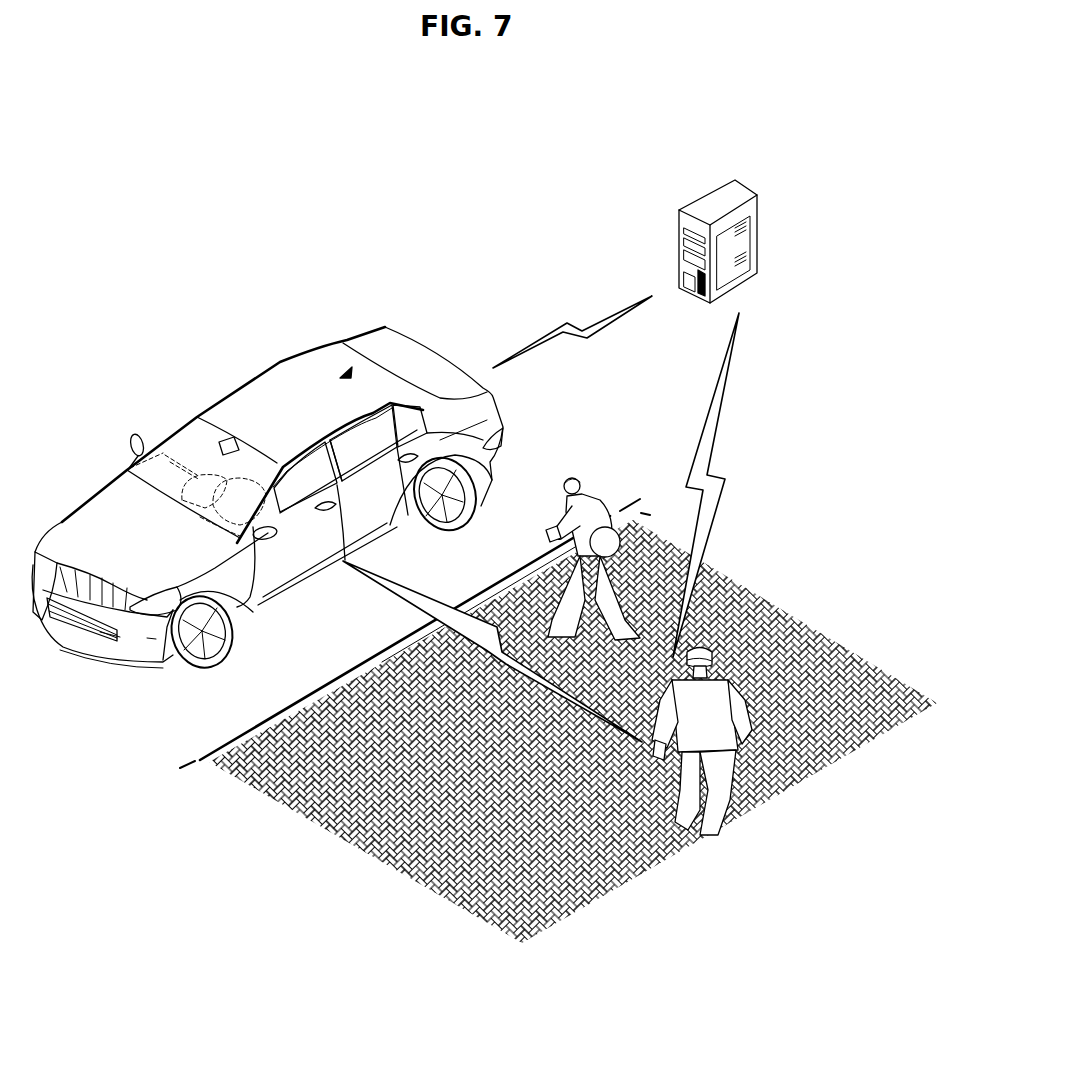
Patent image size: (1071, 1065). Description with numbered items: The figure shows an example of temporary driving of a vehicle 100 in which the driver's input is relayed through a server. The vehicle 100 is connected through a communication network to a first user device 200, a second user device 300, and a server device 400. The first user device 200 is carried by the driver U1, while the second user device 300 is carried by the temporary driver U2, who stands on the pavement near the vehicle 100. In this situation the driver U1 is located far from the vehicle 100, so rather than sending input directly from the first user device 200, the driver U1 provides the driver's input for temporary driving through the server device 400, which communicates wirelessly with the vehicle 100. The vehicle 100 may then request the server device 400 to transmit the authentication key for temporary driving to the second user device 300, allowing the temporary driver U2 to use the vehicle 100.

The vehicle 100 is at (244, 368).
The first user device 200 is at (660, 753).
The second user device 300 is at (551, 527).
The server device 400 is at (713, 195).
The driver U1 is at (706, 648).
The temporary driver U2 is at (576, 478).